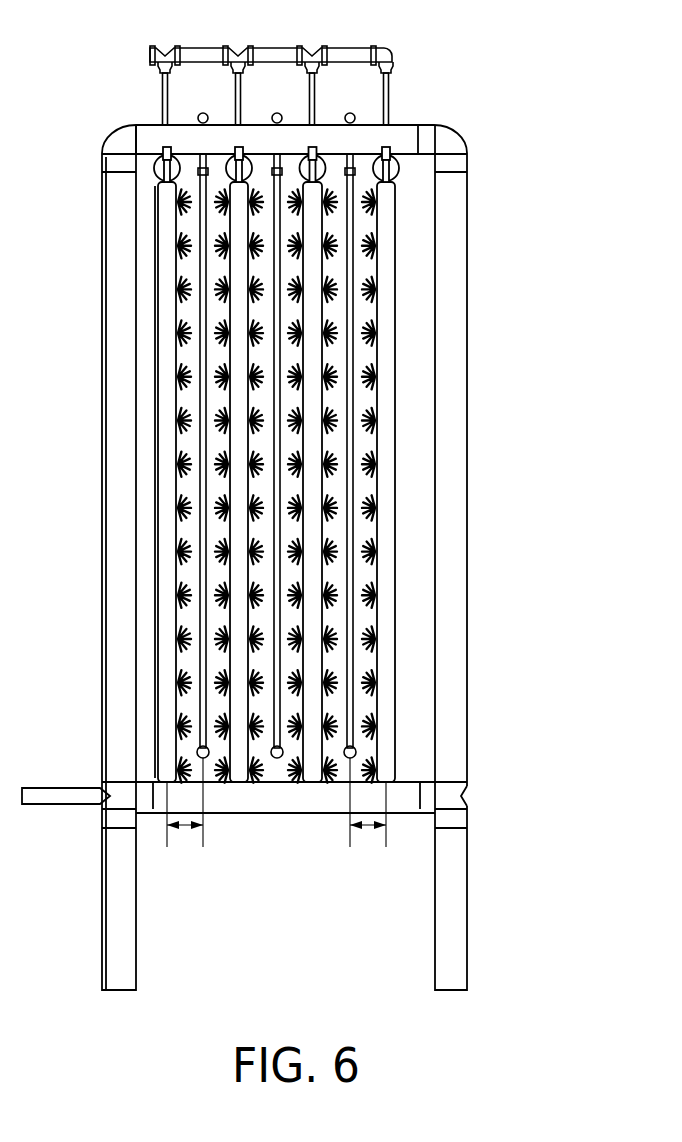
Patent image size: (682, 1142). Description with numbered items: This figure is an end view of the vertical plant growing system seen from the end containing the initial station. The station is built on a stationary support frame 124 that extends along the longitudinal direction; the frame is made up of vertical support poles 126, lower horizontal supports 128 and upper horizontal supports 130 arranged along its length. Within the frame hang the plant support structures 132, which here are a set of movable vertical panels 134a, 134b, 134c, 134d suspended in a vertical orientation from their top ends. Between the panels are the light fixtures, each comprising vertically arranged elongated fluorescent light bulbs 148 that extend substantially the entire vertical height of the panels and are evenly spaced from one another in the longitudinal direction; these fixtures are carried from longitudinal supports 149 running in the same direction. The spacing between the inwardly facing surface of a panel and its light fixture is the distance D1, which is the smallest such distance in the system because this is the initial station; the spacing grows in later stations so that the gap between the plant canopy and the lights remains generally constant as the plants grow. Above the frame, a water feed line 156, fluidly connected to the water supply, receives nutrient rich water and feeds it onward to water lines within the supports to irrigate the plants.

The support frame 124 is at (112, 302).
The vertical support poles 126 is at (117, 498).
The lower horizontal supports 128 is at (276, 798).
The upper horizontal supports 130 is at (412, 126).
The plant support structures 132 is at (162, 433).
The movable vertical panel 134a is at (167, 602).
The movable vertical panel 134b is at (237, 784).
The movable vertical panel 134c is at (312, 784).
The movable vertical panel 134d is at (387, 677).
The elongated fluorescent light bulbs 148 is at (200, 667).
The longitudinal supports 149 is at (350, 113).
The water feed line 156 is at (126, 49).
The distance D1 is at (276, 810).